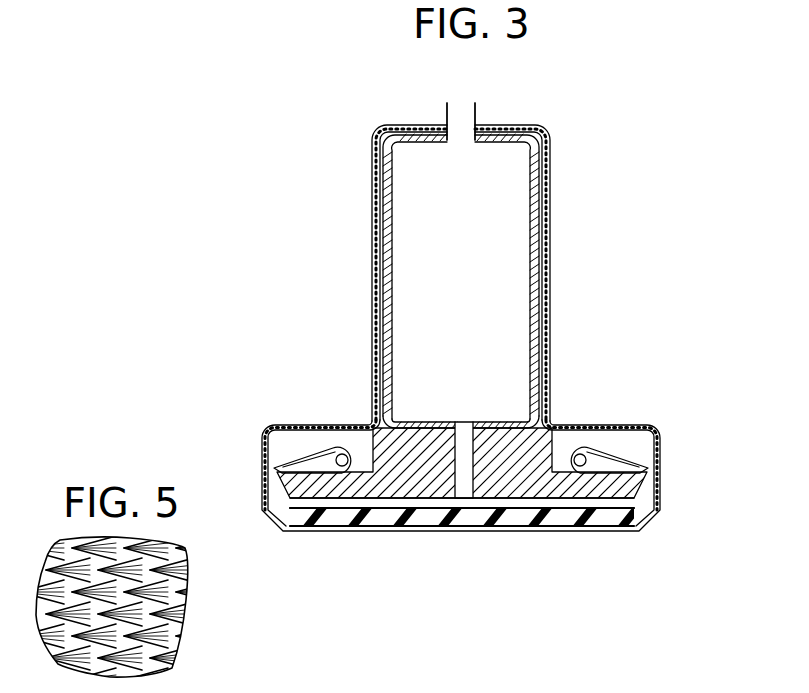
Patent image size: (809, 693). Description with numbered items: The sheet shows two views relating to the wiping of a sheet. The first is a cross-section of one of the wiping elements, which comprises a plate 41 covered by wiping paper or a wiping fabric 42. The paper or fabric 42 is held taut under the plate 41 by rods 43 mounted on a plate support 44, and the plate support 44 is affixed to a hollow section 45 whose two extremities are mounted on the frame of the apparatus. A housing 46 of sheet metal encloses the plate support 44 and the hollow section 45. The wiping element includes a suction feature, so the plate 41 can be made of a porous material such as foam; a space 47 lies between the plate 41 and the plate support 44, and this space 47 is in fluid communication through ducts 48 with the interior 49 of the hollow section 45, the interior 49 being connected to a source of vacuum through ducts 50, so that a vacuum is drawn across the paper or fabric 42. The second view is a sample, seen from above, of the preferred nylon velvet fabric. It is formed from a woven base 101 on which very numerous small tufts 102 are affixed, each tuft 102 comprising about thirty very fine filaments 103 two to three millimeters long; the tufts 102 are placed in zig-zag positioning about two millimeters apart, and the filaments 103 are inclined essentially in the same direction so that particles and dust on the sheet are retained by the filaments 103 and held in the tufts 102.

In FIG. 3, the plate 41 is at (473, 518).
In FIG. 3, the wiping fabric 42 is at (358, 530).
In FIG. 3, the rods 43 is at (327, 445).
In FIG. 3, the plate support 44 is at (563, 422).
In FIG. 3, the hollow section 45 is at (546, 293).
In FIG. 3, the housing 46 is at (552, 172).
In FIG. 3, the space 47 is at (543, 505).
In FIG. 3, the ducts 48 is at (460, 435).
In FIG. 3, the interior of the hollow section 49 is at (412, 264).
In FIG. 3, the ducts 50 is at (447, 118).
In FIG. 5, the woven base 101 is at (53, 640).
In FIG. 5, the tufts 102 is at (184, 593).
In FIG. 5, the filaments 103 is at (177, 645).